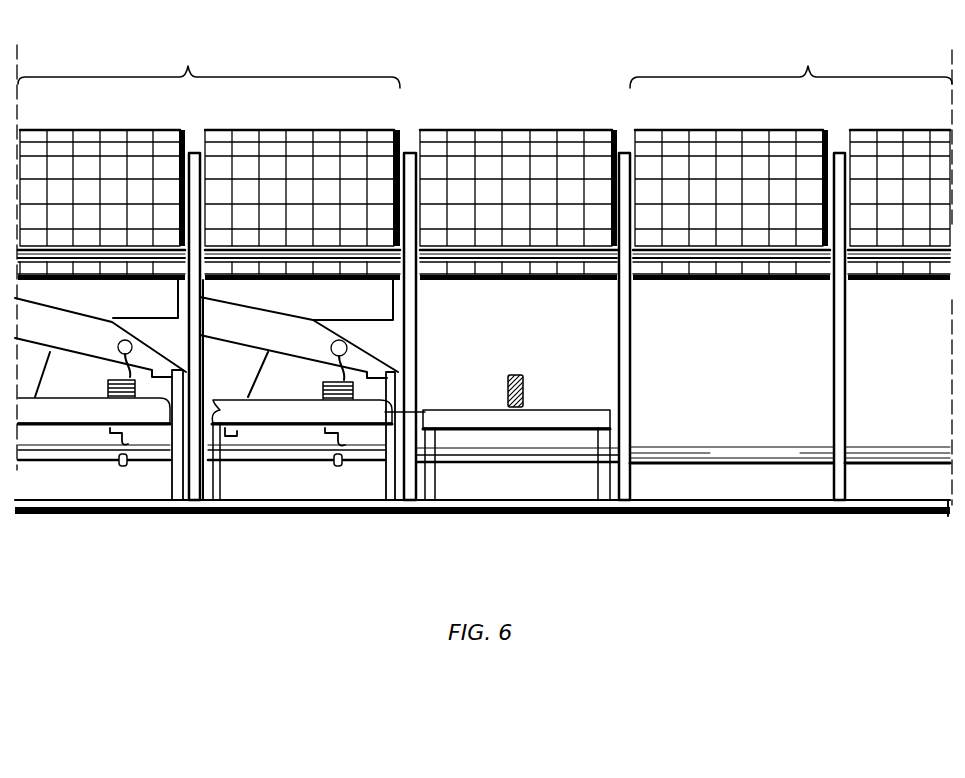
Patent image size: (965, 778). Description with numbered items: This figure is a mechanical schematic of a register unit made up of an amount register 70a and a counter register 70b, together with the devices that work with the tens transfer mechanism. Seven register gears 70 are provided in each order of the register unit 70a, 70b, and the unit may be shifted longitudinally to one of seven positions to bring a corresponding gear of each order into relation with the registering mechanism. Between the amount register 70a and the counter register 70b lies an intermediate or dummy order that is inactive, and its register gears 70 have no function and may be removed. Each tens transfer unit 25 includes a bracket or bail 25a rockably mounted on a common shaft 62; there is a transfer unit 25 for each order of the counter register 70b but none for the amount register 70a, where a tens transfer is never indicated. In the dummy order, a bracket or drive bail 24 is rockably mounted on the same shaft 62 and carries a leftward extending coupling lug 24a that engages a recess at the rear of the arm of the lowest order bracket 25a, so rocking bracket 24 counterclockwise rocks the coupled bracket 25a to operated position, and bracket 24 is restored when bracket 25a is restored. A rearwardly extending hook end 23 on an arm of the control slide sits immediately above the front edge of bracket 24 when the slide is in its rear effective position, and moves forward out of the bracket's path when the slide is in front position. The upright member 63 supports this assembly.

The register gear 70 is at (380, 167).
The amount register 70a is at (791, 57).
The counter register 70b is at (209, 56).
The hook end 23 is at (508, 402).
The bracket or drive bail 24 is at (573, 417).
The coupling lug 24a is at (423, 411).
The tens transfer unit 25 is at (150, 473).
The bracket or bail 25a is at (80, 412).
The common shaft 62 is at (767, 452).
The upright post 63 is at (630, 480).